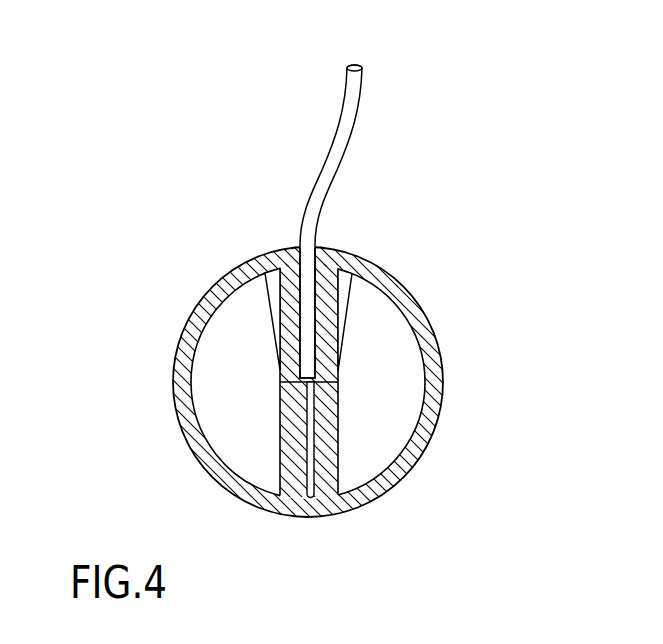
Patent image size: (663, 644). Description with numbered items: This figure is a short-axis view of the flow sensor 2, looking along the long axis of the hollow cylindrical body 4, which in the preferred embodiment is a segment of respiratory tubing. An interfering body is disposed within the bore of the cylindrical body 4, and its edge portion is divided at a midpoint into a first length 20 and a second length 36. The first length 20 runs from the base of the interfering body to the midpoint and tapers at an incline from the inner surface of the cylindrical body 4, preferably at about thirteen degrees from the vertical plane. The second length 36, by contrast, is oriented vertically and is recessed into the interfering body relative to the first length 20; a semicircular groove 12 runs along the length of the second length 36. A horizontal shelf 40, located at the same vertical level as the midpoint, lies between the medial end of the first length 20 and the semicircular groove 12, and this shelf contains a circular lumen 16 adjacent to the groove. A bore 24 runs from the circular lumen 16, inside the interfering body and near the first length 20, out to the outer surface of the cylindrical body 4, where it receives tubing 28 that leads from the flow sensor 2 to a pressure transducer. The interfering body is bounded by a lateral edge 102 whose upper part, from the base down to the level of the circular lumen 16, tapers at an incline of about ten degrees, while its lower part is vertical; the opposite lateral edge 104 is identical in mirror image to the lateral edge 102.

The flow sensor 2 is at (167, 455).
The hollow cylindrical body 4 is at (446, 356).
The semicircular groove 12 is at (320, 457).
The circular lumen 16 is at (320, 371).
The first length 20 is at (334, 293).
The bore 24 is at (315, 252).
The tubing 28 is at (368, 72).
The second length 36 is at (334, 430).
The horizontal shelf 40 is at (284, 366).
The lateral edge 102 is at (252, 398).
The lateral edge 104 is at (347, 396).